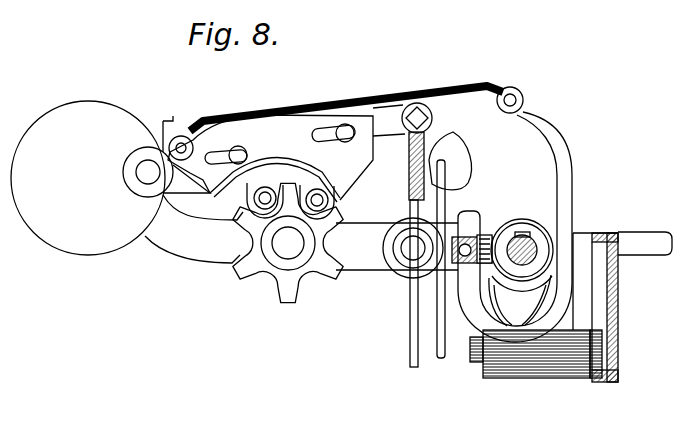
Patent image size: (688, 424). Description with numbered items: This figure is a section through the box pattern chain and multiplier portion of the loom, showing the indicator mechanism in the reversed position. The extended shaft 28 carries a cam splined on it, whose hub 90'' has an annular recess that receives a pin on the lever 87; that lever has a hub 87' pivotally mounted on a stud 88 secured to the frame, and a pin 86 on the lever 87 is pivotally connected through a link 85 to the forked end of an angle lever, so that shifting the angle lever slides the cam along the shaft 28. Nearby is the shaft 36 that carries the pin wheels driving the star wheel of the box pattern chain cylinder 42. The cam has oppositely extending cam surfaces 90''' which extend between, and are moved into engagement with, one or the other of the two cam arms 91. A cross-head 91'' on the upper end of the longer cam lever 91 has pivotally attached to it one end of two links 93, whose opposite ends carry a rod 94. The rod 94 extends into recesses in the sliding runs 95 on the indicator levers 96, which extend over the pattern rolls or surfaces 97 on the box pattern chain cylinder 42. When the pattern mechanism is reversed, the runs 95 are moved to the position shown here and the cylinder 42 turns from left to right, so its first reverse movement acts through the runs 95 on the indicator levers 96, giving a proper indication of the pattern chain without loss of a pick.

The extended shaft 28 is at (575, 236).
The shaft 36 is at (380, 270).
The box pattern chain cylinder 42 is at (247, 266).
The link 85 is at (410, 262).
The pin 86 is at (458, 246).
The lever 87 is at (430, 235).
The hub 87' is at (536, 368).
The stud 88 is at (473, 353).
The hub of cam 90'' is at (531, 229).
The cam surfaces 90''' is at (548, 260).
The cam arms 91 is at (534, 227).
The cross-head 91'' is at (529, 91).
The links 93 is at (392, 95).
The rod 94 is at (176, 138).
The sliding runs 95 is at (275, 138).
The indicator levers 96 is at (185, 183).
The pattern rolls or surfaces 97 is at (330, 199).